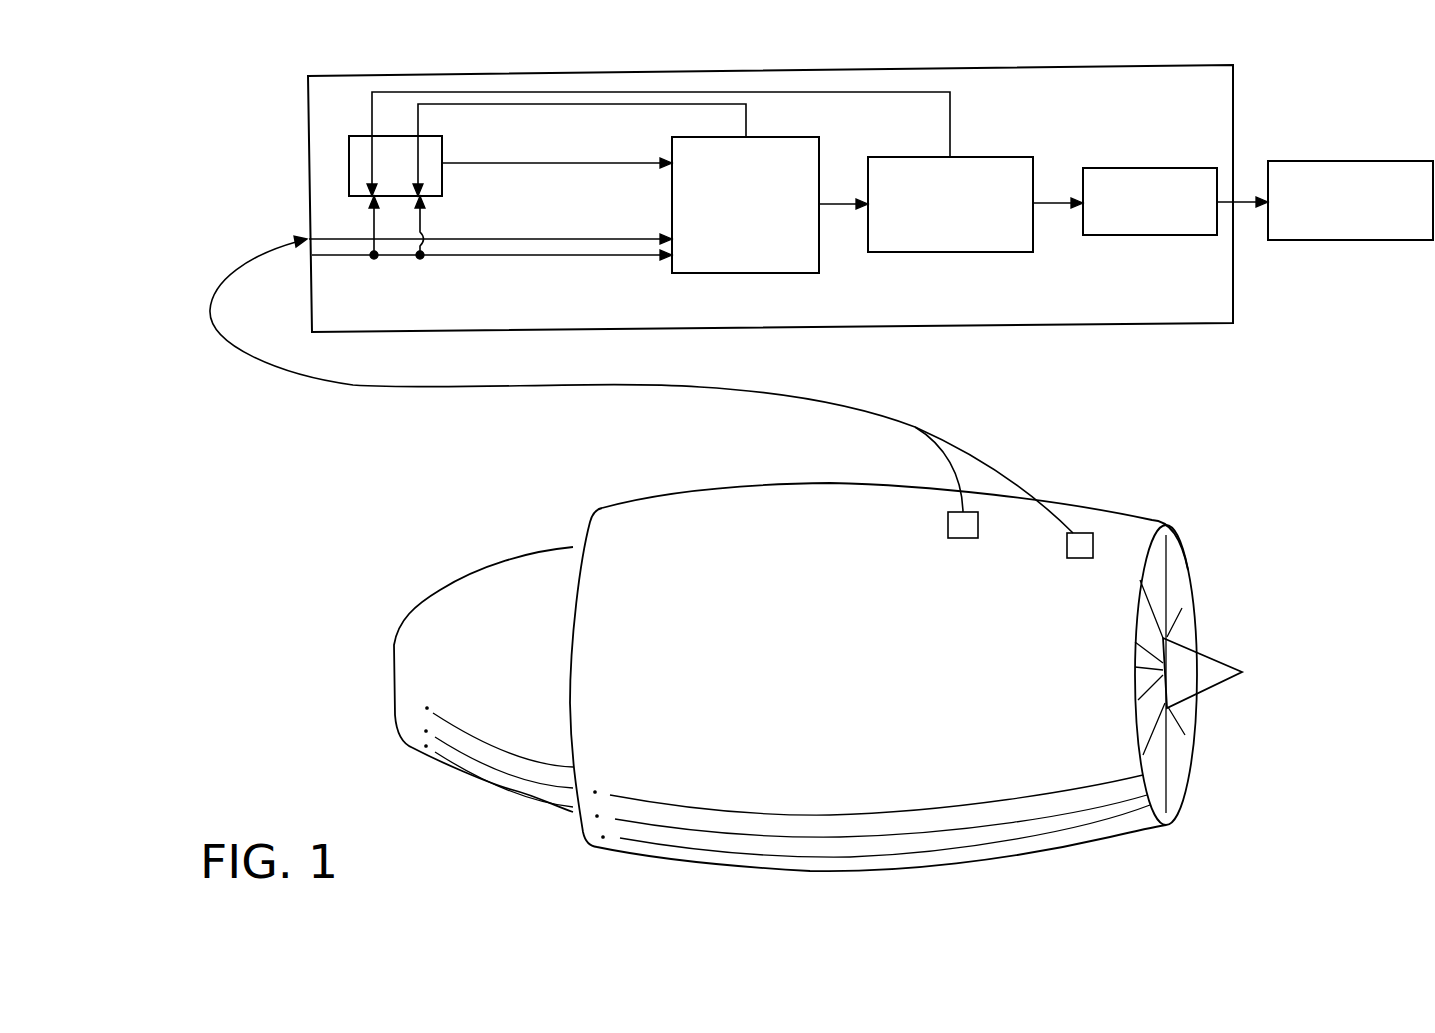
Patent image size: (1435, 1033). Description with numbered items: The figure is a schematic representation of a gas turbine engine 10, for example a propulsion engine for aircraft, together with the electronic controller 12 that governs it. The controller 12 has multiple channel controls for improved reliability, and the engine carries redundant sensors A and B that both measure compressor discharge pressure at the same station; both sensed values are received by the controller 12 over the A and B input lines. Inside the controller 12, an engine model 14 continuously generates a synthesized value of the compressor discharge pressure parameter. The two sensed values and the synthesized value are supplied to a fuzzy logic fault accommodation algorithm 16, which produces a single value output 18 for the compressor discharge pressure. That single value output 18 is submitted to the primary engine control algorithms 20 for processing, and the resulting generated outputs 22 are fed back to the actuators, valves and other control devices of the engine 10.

The gas turbine engine 10 is at (366, 538).
The electronic controller 12 is at (290, 158).
The engine model 14 is at (357, 136).
The fuzzy logic fault accommodation algorithm 16 is at (740, 273).
The single value output 18 is at (832, 202).
The primary engine control algorithms 20 is at (972, 252).
The generated outputs 22 is at (1163, 235).